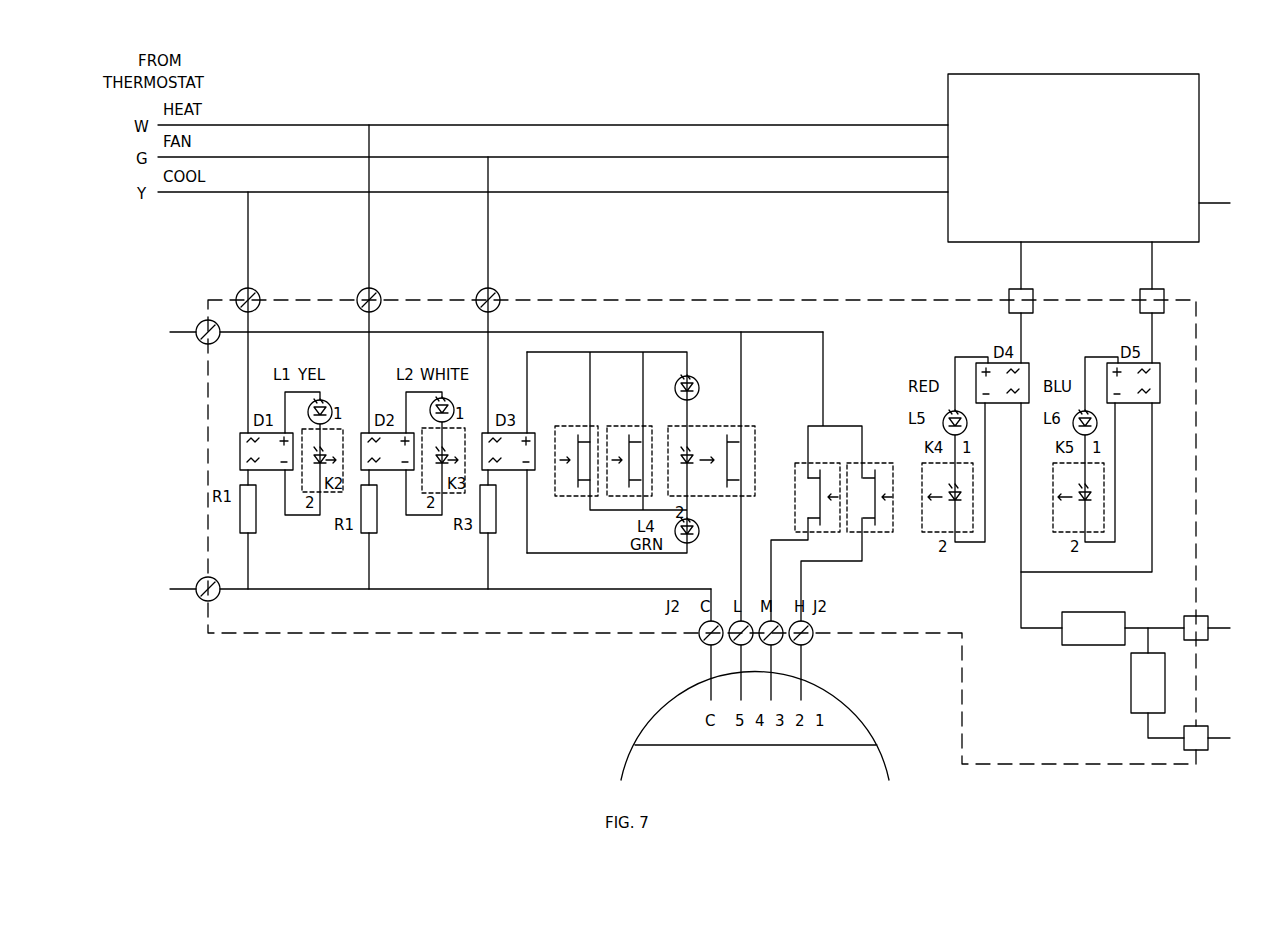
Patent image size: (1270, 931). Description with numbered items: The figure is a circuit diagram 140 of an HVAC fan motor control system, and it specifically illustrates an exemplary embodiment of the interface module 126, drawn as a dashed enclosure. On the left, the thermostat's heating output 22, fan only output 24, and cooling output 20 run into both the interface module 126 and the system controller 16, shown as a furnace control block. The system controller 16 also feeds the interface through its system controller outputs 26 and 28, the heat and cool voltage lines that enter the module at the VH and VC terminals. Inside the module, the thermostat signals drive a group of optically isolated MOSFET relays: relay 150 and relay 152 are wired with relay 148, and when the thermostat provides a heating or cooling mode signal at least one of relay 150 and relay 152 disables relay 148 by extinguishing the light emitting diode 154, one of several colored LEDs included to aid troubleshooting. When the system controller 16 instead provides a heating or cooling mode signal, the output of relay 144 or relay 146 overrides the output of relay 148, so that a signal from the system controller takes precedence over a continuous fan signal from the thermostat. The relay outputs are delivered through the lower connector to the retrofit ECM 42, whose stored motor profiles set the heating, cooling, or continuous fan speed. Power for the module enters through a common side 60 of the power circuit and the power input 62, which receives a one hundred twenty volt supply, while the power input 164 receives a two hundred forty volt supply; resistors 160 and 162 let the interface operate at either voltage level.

The circuit diagram 140 is at (797, 97).
The heating output 22 is at (609, 125).
The fan only output 24 is at (643, 157).
The cooling output 20 is at (607, 192).
The system controller 16 is at (948, 108).
The system controller output 26 is at (1021, 262).
The system controller output 28 is at (1152, 262).
The interface module 126 is at (738, 300).
The light emitting diode 154 is at (683, 372).
The relay 150 is at (565, 516).
The relay 152 is at (613, 516).
The relay 148 is at (707, 500).
The relay 144 is at (830, 535).
The relay 146 is at (880, 535).
The ECM 42 is at (656, 717).
The common side 60 is at (262, 601).
The resistor 160 is at (1062, 639).
The resistor 162 is at (1131, 689).
The power input 62 is at (1210, 622).
The power input 164 is at (1210, 746).